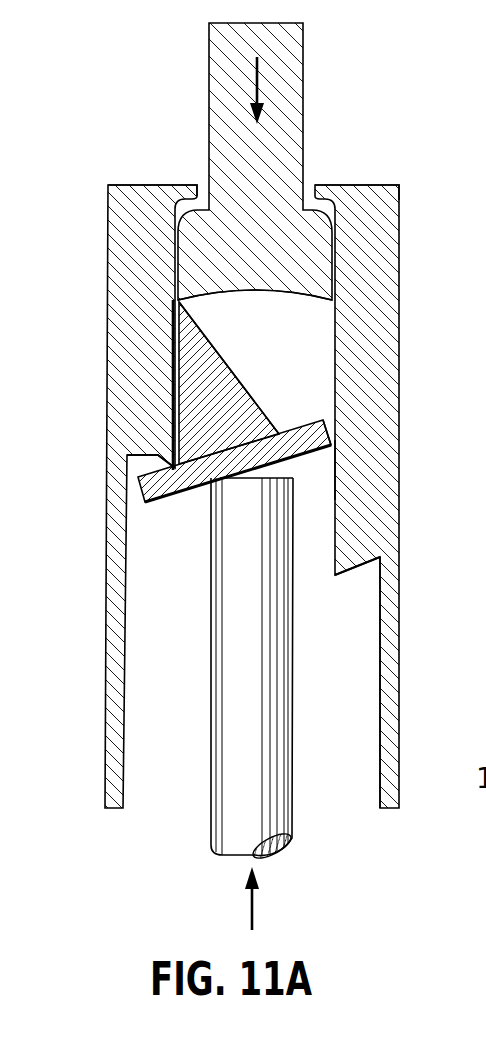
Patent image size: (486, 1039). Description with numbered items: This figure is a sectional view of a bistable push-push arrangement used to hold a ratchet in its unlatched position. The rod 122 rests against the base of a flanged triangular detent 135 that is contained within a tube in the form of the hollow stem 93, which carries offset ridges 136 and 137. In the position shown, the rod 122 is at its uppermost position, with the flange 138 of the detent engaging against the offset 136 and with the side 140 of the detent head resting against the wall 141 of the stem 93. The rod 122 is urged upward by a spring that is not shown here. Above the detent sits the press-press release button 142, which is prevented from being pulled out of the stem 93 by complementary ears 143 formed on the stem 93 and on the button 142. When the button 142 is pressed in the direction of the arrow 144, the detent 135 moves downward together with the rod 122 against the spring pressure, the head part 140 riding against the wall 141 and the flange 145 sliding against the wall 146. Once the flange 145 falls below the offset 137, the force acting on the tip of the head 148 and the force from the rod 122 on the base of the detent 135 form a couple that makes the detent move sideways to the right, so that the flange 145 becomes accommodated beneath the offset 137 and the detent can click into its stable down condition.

The hollow stem 93 is at (122, 205).
The complementary ears 143 is at (190, 186).
The press-press release button 142 is at (283, 257).
The arrow 144 is at (258, 72).
The head tip 148 is at (184, 303).
The flanged triangular detent 135 is at (245, 436).
The head side 140 is at (200, 377).
The stem wall 141 is at (173, 320).
The offset ridge 136 is at (148, 460).
The flange 138 is at (147, 488).
The flange 145 is at (323, 433).
The wall 146 is at (335, 472).
The offset ridge 137 is at (358, 556).
The rod 122 is at (228, 823).